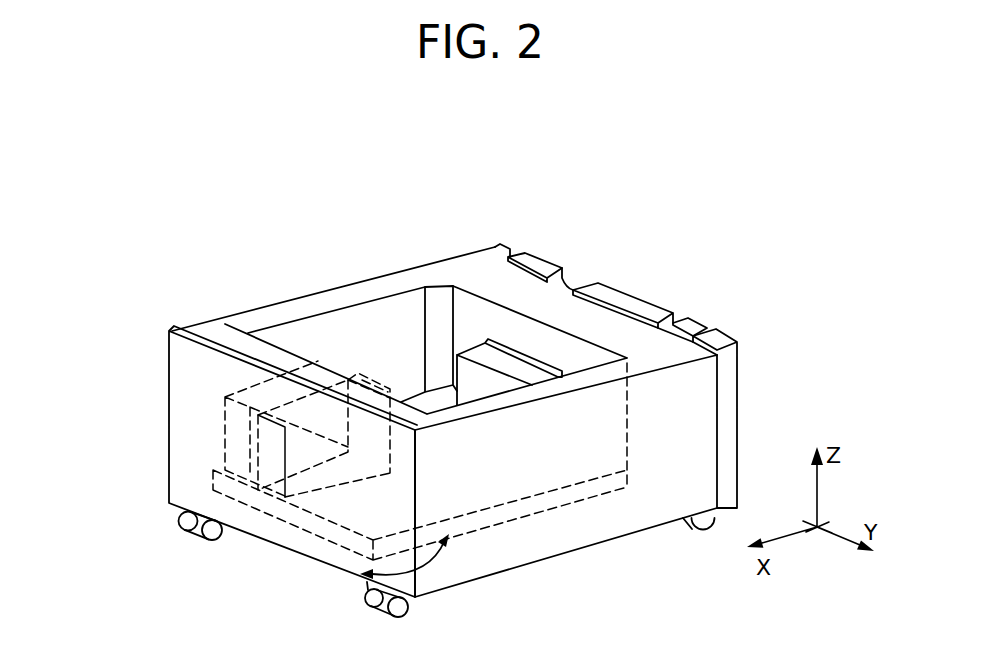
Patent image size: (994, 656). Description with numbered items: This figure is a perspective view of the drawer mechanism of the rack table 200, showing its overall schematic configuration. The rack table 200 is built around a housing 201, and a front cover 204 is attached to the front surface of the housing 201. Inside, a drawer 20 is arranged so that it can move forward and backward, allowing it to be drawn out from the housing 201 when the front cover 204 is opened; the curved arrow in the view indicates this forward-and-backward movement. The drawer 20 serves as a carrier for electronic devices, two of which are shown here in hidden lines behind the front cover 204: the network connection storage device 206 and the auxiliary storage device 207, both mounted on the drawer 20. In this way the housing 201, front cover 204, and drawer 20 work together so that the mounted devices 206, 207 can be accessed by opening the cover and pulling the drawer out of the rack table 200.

The rack table 200 is at (758, 238).
The housing 201 is at (270, 307).
The front cover 204 is at (187, 392).
The network connection storage device 206 is at (344, 370).
The auxiliary storage device 207 is at (384, 388).
The drawer 20 is at (590, 491).